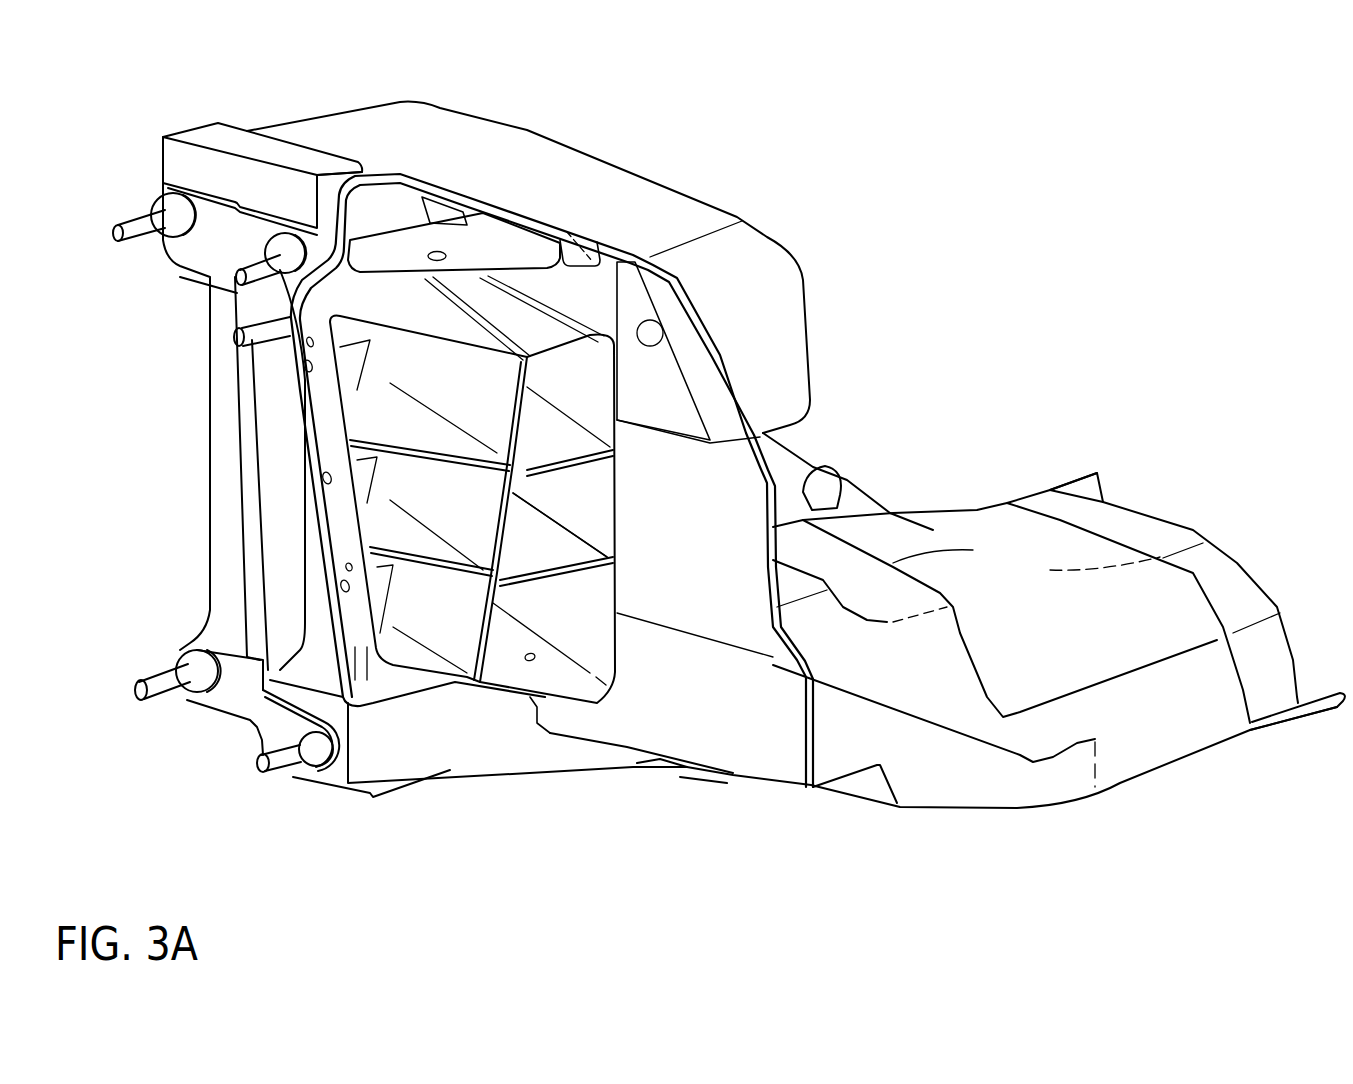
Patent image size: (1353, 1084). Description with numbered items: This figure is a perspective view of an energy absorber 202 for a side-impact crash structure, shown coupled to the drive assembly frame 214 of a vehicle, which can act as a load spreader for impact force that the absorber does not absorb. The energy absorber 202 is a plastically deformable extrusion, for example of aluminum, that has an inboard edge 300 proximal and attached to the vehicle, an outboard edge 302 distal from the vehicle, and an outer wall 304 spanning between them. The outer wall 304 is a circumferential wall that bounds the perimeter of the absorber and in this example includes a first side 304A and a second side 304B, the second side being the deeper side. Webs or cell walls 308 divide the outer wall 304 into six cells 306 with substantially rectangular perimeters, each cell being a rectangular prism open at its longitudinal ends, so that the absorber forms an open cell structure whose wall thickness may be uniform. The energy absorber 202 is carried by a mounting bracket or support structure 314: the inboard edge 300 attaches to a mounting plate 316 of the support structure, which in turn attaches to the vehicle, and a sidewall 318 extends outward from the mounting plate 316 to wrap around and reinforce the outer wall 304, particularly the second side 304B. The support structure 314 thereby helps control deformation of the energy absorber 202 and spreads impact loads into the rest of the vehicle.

The energy absorber 202 is at (497, 652).
The drive assembly frame 214 is at (1117, 710).
The inboard edge 300 is at (320, 543).
The outboard edge 302 is at (617, 597).
The outer wall 304 is at (402, 308).
The first side 304A is at (320, 420).
The second side 304B is at (600, 478).
The cells 306 is at (573, 522).
The cell walls 308 is at (513, 617).
The support structure 314 is at (490, 240).
The mounting plate 316 is at (397, 207).
The sidewall 318 is at (578, 265).